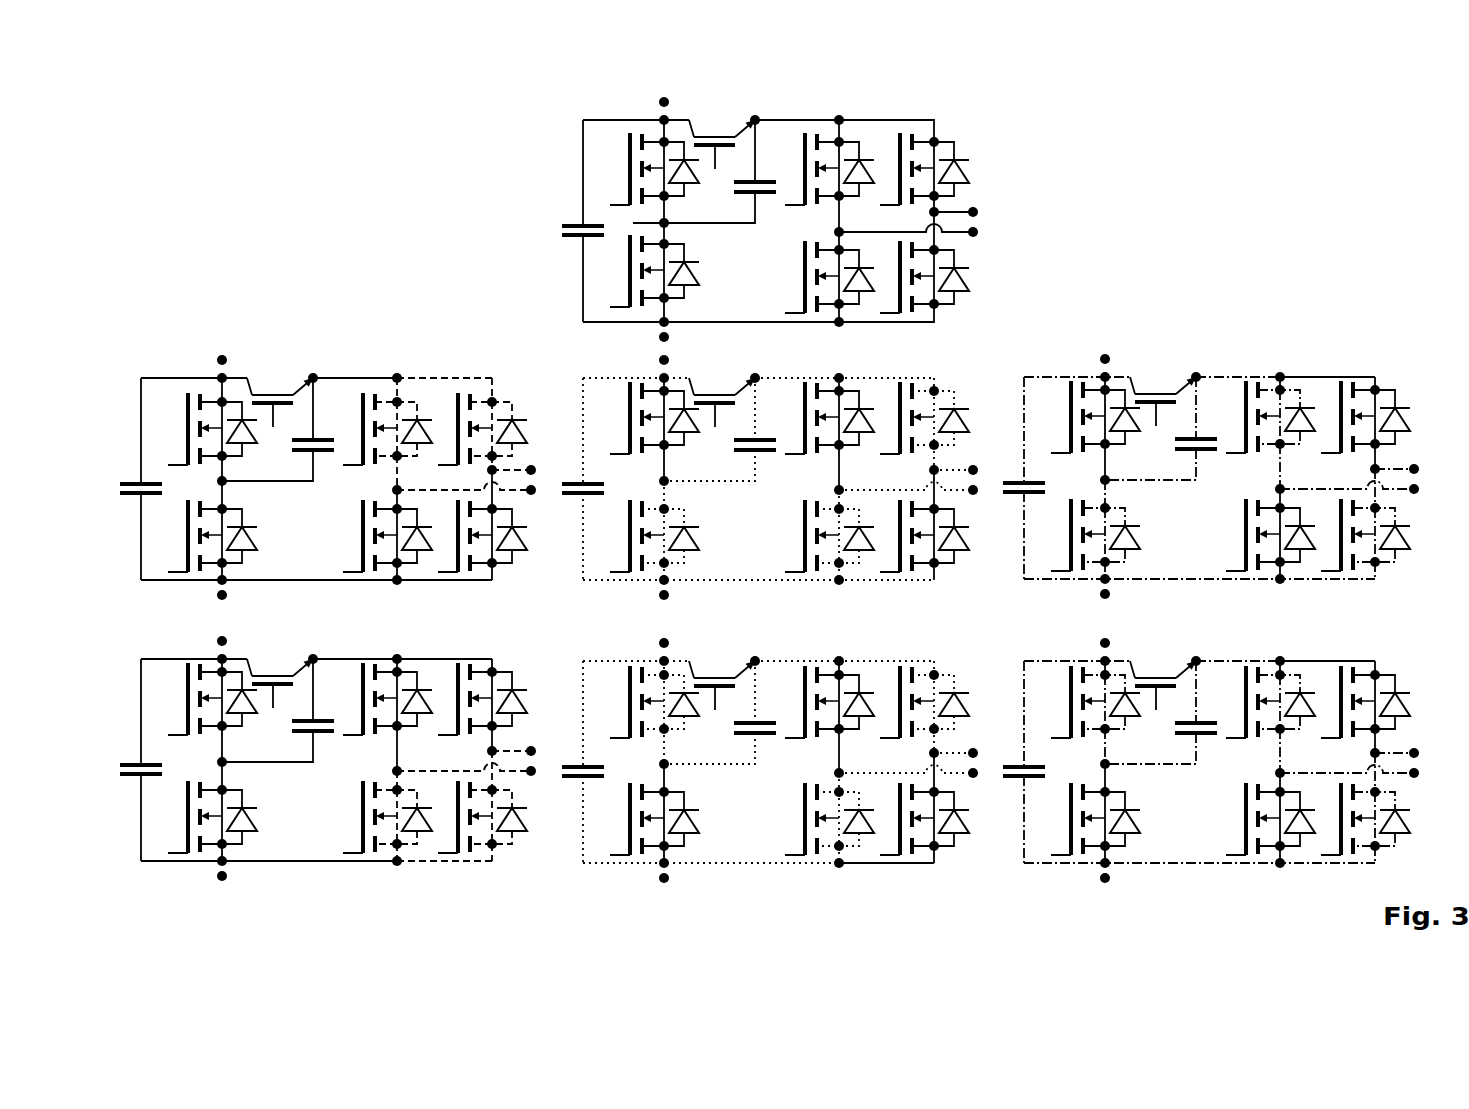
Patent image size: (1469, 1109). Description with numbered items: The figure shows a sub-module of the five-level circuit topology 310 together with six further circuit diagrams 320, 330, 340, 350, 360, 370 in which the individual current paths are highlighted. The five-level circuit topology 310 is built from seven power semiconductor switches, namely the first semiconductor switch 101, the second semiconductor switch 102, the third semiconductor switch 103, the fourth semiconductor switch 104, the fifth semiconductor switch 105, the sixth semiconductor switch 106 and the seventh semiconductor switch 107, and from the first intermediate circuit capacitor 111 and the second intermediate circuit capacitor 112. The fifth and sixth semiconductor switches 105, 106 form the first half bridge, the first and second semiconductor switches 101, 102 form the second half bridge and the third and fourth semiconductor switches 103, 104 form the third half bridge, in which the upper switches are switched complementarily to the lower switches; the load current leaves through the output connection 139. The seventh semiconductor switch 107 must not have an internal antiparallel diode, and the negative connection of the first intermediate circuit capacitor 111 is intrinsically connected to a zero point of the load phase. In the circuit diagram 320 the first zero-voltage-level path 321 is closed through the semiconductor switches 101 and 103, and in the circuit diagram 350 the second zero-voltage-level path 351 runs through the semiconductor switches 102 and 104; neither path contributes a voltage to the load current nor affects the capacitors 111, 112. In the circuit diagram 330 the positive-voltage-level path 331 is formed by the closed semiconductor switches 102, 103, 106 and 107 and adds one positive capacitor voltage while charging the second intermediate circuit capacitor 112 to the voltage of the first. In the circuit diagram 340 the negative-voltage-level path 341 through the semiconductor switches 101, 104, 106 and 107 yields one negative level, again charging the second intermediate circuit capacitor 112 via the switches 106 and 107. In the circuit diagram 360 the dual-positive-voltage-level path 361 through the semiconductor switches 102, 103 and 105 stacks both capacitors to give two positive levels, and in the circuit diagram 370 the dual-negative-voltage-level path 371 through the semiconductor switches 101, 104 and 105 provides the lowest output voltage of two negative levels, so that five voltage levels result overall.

The first semiconductor switch 101 is at (797, 168).
The second semiconductor switch 102 is at (800, 288).
The third semiconductor switch 103 is at (957, 153).
The fourth semiconductor switch 104 is at (957, 257).
The fifth semiconductor switch 105 is at (623, 170).
The sixth semiconductor switch 106 is at (627, 277).
The seventh semiconductor switch 107 is at (713, 137).
The first intermediate circuit capacitor 111 is at (572, 237).
The second intermediate circuit capacitor 112 is at (747, 197).
The output connection 139 is at (980, 200).
The five-level circuit topology 310 is at (744, 214).
The circuit diagram 320 is at (319, 452).
The first zero-voltage-level path 321 is at (397, 475).
The circuit diagram 330 is at (784, 453).
The positive-voltage-level path 331 is at (838, 488).
The circuit diagram 340 is at (1214, 448).
The negative-voltage-level path 341 is at (1279, 470).
The circuit diagram 350 is at (318, 732).
The second zero-voltage-level path 351 is at (397, 745).
The circuit diagram 360 is at (782, 738).
The dual-positive-voltage-level path 361 is at (838, 778).
The circuit diagram 370 is at (1212, 733).
The dual-negative-voltage-level path 371 is at (1279, 757).